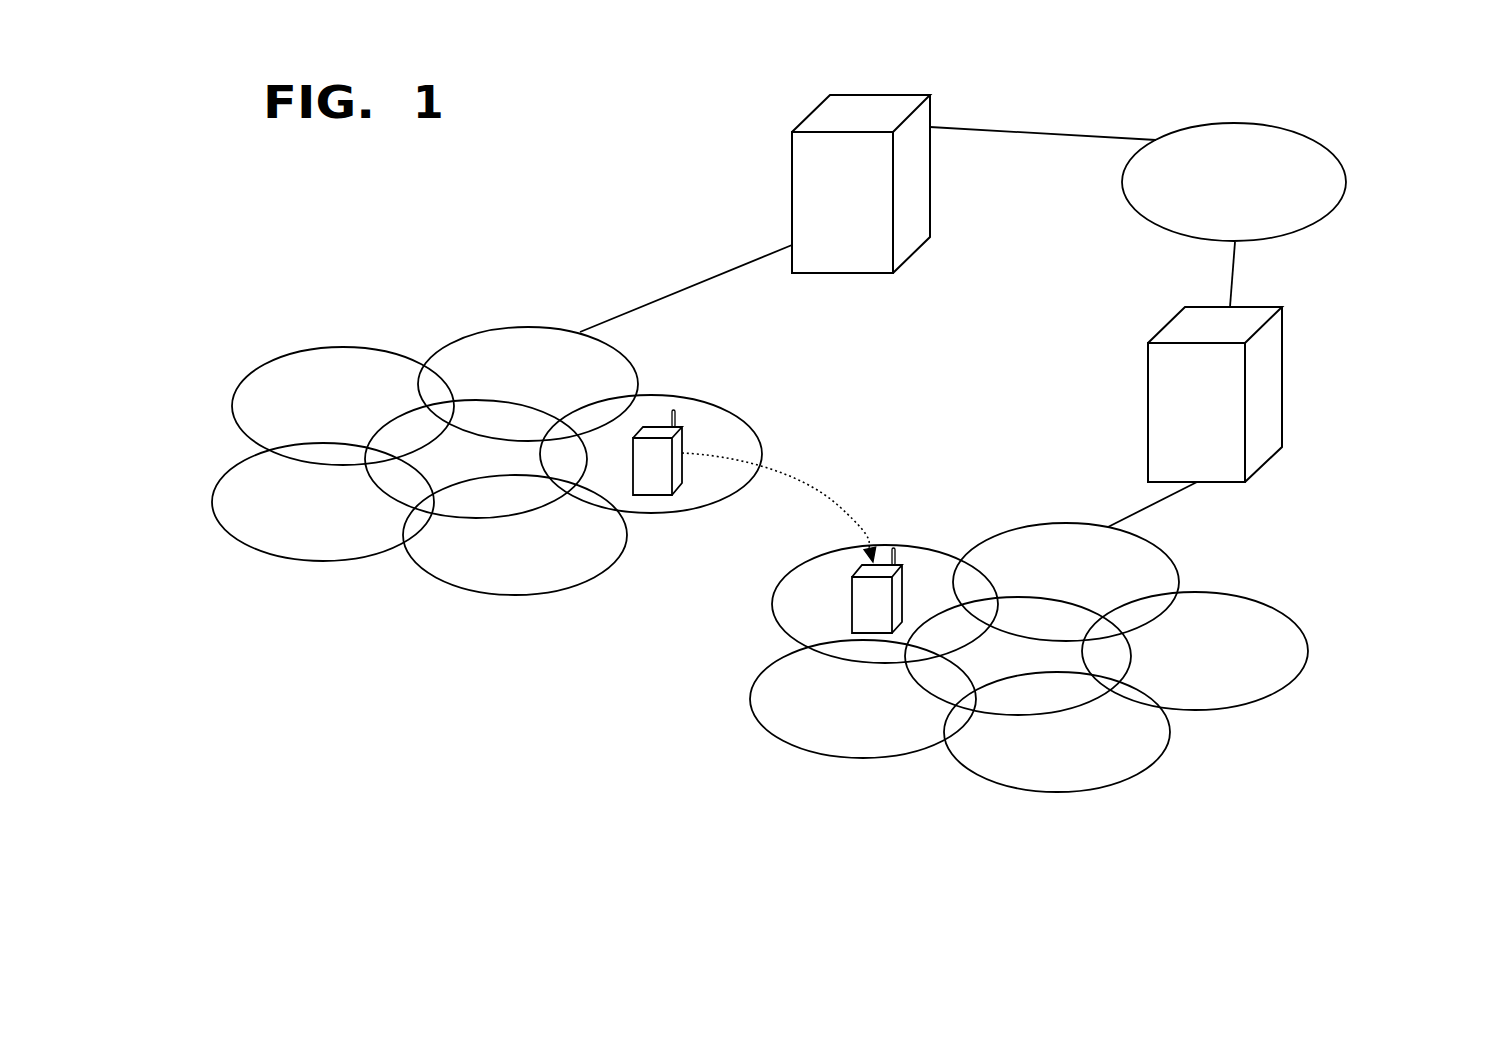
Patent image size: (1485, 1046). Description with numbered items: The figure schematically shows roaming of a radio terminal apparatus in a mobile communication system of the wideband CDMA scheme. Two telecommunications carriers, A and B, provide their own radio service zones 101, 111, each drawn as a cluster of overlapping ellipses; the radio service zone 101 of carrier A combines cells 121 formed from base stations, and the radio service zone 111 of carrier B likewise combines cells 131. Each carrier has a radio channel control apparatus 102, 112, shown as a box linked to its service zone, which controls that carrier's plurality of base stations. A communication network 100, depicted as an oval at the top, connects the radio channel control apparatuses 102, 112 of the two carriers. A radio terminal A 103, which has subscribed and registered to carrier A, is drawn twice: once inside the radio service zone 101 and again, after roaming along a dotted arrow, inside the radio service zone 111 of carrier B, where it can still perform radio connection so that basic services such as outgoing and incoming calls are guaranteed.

The communication network 100 is at (1212, 122).
The radio service zone 101 is at (459, 394).
The radio channel control apparatus 102 is at (925, 185).
The radio terminal A 103 is at (682, 442).
The radio service zone 111 is at (986, 579).
The radio channel control apparatus 112 is at (1222, 482).
The cell 121 is at (225, 472).
The cell 131 is at (773, 738).